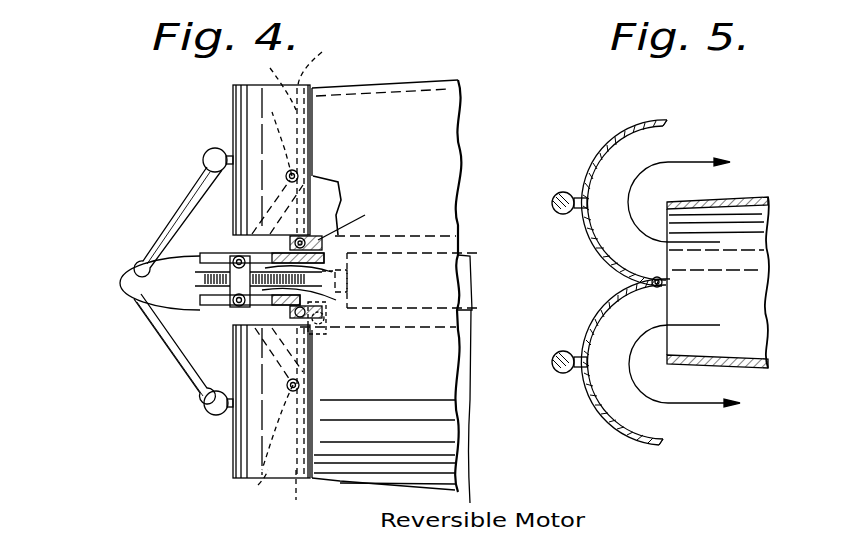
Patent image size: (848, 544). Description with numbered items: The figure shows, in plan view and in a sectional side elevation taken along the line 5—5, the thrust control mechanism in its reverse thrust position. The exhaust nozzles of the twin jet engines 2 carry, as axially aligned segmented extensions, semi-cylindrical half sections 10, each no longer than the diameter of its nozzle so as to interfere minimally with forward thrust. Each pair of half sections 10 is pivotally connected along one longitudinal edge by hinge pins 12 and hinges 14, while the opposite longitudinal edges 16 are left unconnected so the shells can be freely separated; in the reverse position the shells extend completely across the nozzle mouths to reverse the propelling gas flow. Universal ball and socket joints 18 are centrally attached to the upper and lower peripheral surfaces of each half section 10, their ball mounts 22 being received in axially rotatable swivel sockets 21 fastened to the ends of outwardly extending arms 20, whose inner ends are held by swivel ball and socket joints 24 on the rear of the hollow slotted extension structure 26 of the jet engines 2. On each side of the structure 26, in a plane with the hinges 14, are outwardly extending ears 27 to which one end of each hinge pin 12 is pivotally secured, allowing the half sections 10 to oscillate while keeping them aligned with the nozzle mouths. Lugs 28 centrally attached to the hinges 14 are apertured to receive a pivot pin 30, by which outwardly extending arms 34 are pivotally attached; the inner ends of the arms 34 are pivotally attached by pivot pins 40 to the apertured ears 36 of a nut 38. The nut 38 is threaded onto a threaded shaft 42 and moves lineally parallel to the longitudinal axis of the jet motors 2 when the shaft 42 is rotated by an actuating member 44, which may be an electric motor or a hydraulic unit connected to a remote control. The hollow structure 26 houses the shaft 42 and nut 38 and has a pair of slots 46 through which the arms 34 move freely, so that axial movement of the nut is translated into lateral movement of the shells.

In FIG. 4, the jet engines 2 is at (445, 100).
In FIG. 5, the jet engines 2 is at (715, 212).
In FIG. 4, the section line 5— 5 is at (196, 163).
In FIG. 4, the semi-cylindrical half sections 10 is at (246, 100).
In FIG. 5, the semi-cylindrical half sections 10 is at (617, 138).
In FIG. 4, the hinge pins 12 is at (309, 285).
In FIG. 5, the hinge pins 12 is at (658, 287).
In FIG. 4, the hinges 14 is at (279, 293).
In FIG. 5, the hinges 14 is at (658, 278).
In FIG. 4, the longitudinal edges 16 is at (312, 128).
In FIG. 5, the longitudinal edges 16 is at (667, 123).
In FIG. 4, the universal ball and socket joints 18 is at (192, 176).
In FIG. 5, the universal ball and socket joints 18 is at (575, 218).
In FIG. 4, the outwardly extending arms 20 is at (180, 215).
In FIG. 5, the outwardly extending arms 20 is at (555, 206).
In FIG. 4, the swivel sockets 21 is at (210, 158).
In FIG. 5, the swivel sockets 21 is at (563, 192).
In FIG. 4, the ball mounts 22 is at (228, 154).
In FIG. 5, the ball mounts 22 is at (579, 196).
In FIG. 4, the swivel ball and socket joints 24 is at (135, 280).
In FIG. 4, the slotted extension structure 26 is at (150, 290).
In FIG. 4, the outwardly extending ears 27 is at (322, 240).
In FIG. 4, the lugs 28 is at (306, 140).
In FIG. 4, the pivot pin 30 is at (277, 291).
In FIG. 4, the outwardly extending arms 34 is at (238, 252).
In FIG. 4, the apertured ears 36 is at (235, 258).
In FIG. 4, the nut 38 is at (229, 283).
In FIG. 4, the pivot pins 40 is at (210, 268).
In FIG. 4, the threaded shaft 42 is at (347, 267).
In FIG. 4, the actuating member 44 is at (460, 260).
In FIG. 4, the slots 46 is at (329, 319).